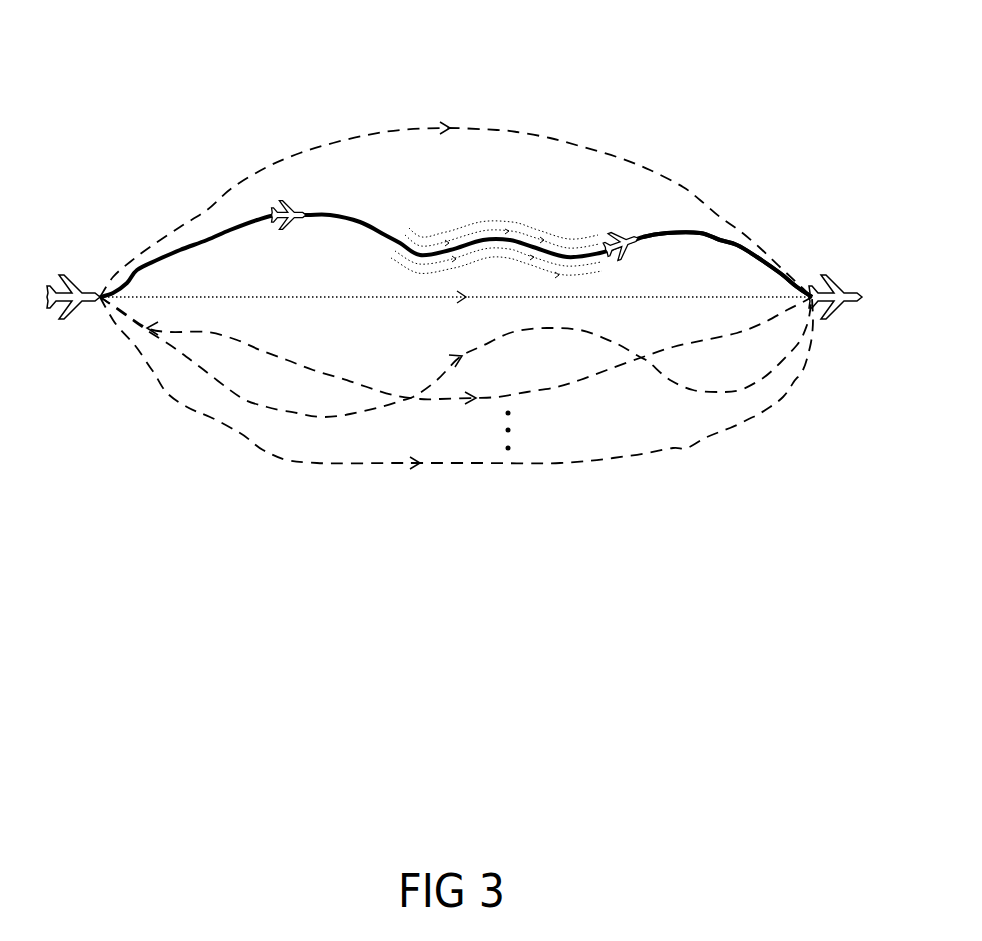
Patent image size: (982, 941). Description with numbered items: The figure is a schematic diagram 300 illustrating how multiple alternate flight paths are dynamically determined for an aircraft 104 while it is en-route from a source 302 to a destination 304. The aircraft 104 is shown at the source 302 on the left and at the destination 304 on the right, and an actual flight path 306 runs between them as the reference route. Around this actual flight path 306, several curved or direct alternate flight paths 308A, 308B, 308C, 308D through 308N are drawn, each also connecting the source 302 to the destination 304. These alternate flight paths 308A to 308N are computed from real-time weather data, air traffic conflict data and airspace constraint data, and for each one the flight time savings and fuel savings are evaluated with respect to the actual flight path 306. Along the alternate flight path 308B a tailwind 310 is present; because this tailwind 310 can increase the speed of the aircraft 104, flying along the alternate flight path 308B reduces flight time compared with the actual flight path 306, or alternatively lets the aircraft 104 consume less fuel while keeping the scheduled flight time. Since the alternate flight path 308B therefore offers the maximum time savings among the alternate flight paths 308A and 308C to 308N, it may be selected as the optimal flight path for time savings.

The aircraft 104 is at (278, 207).
The schematic diagram 300 is at (596, 706).
The source 302 is at (100, 297).
The destination 304 is at (813, 295).
The actual flight path 306 is at (412, 297).
The alternate flight path 308A is at (510, 129).
The alternate flight path 308B is at (737, 243).
The alternate flight path 308C is at (787, 363).
The alternate flight path 308D is at (566, 383).
The alternate flight path 308N is at (690, 447).
The tailwind 310 is at (513, 227).